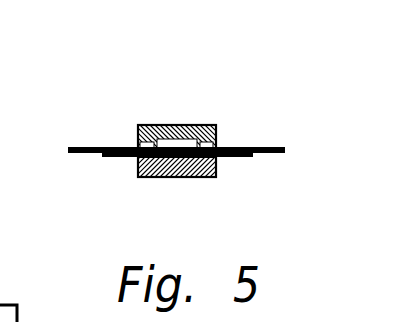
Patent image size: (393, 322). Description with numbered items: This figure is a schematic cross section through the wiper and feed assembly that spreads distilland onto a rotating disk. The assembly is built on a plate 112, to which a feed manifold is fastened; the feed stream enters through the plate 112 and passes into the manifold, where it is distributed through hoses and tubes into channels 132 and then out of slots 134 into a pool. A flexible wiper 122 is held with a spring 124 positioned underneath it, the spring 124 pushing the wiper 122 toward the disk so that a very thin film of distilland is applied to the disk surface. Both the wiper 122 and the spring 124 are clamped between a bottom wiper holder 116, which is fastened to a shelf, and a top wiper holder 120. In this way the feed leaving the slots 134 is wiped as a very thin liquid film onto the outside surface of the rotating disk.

The plate 112 is at (15, 287).
The bottom wiper holder 116 is at (167, 177).
The top wiper holder 120 is at (183, 143).
The flexible wiper 122 is at (250, 147).
The spring 124 is at (118, 155).
The channel 132 is at (165, 126).
The slot 134 is at (139, 143).